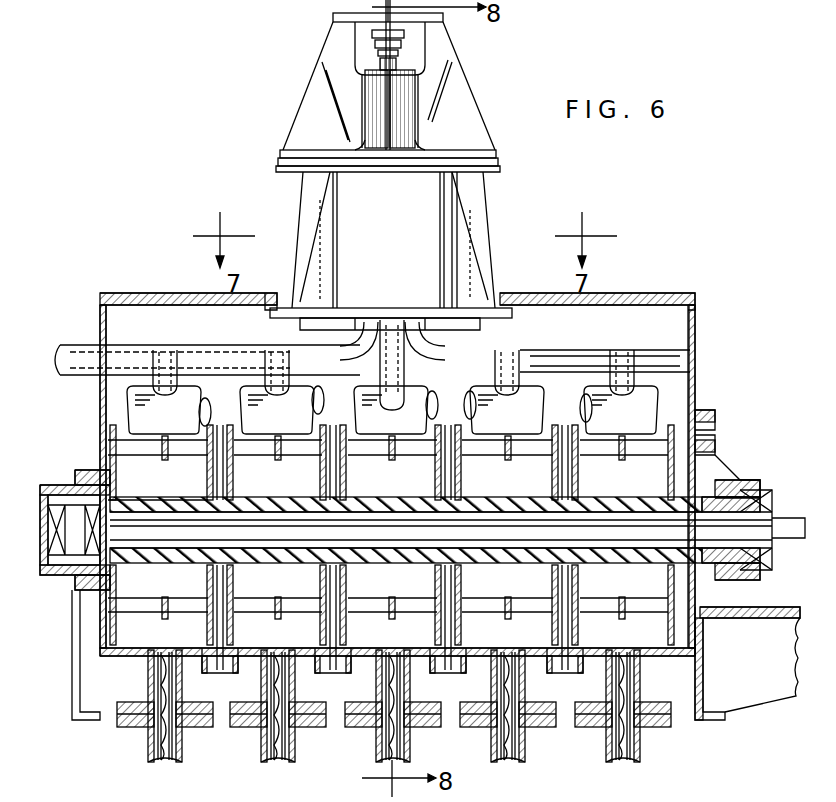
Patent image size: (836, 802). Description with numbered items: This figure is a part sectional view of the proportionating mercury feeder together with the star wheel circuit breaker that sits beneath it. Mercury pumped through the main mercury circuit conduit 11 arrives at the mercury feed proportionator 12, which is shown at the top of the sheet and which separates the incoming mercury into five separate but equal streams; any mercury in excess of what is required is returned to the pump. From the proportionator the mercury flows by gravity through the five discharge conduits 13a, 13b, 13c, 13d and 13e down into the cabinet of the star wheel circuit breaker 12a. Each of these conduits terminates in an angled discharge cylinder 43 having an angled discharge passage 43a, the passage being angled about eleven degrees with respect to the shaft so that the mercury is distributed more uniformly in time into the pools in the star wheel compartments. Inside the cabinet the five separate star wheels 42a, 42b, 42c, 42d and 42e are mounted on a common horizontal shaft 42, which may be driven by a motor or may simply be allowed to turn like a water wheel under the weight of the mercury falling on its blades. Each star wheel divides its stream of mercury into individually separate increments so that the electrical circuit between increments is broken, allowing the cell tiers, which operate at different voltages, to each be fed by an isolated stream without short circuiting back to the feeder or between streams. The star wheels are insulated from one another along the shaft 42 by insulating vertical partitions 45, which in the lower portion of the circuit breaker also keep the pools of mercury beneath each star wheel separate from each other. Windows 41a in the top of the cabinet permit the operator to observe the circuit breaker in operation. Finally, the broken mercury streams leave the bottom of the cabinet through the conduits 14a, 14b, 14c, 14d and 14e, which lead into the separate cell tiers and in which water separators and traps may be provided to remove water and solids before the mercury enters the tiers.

The main mercury circuit conduit 11 is at (78, 350).
The mercury feed proportionator 12 is at (512, 205).
The star wheel circuit breaker 12a is at (674, 392).
The conduit 13a is at (178, 362).
The conduit 13b is at (275, 358).
The conduit 13c is at (388, 340).
The conduit 13d is at (510, 352).
The conduit 13e is at (625, 352).
The conduit 14a is at (165, 764).
The conduit 14b is at (280, 762).
The conduit 14c is at (408, 740).
The conduit 14d is at (512, 760).
The conduit 14e is at (628, 760).
The windows 41a is at (177, 300).
The common horizontal shaft 42 is at (762, 535).
The star wheel 42a is at (158, 462).
The star wheel 42b is at (278, 465).
The star wheel 42c is at (392, 461).
The star wheel 42d is at (507, 461).
The star wheel 42e is at (627, 462).
The angled discharge cylinder 43 is at (124, 402).
The angled discharge passage 43a is at (314, 427).
The insulating vertical partitions 45 is at (563, 435).